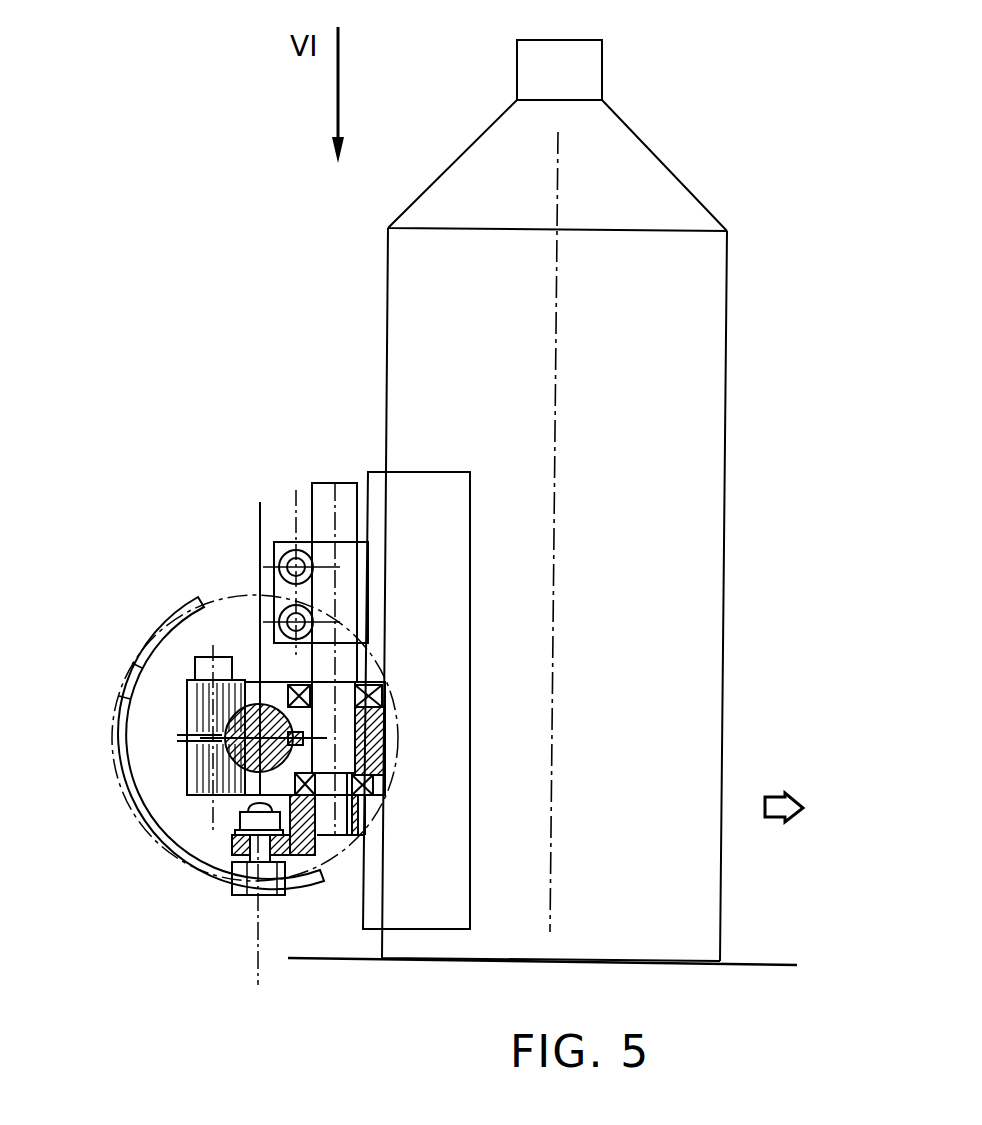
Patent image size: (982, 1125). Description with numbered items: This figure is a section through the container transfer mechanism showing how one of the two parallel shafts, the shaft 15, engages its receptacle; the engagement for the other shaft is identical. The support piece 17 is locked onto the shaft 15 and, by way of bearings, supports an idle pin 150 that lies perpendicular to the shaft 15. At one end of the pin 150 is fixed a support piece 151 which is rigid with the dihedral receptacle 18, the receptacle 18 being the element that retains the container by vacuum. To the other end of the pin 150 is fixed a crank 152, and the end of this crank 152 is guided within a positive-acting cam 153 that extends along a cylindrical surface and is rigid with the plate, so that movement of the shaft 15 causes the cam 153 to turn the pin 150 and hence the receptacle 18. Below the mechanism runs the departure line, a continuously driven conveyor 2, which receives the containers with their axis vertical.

The conveyor 2 is at (753, 965).
The shaft 15 is at (253, 744).
The support piece 17 is at (187, 690).
The dihedral receptacle 18 is at (388, 487).
The idle pin 150 is at (325, 483).
The support piece 151 is at (280, 542).
The crank 152 is at (230, 838).
The positive-acting cam 153 is at (177, 603).